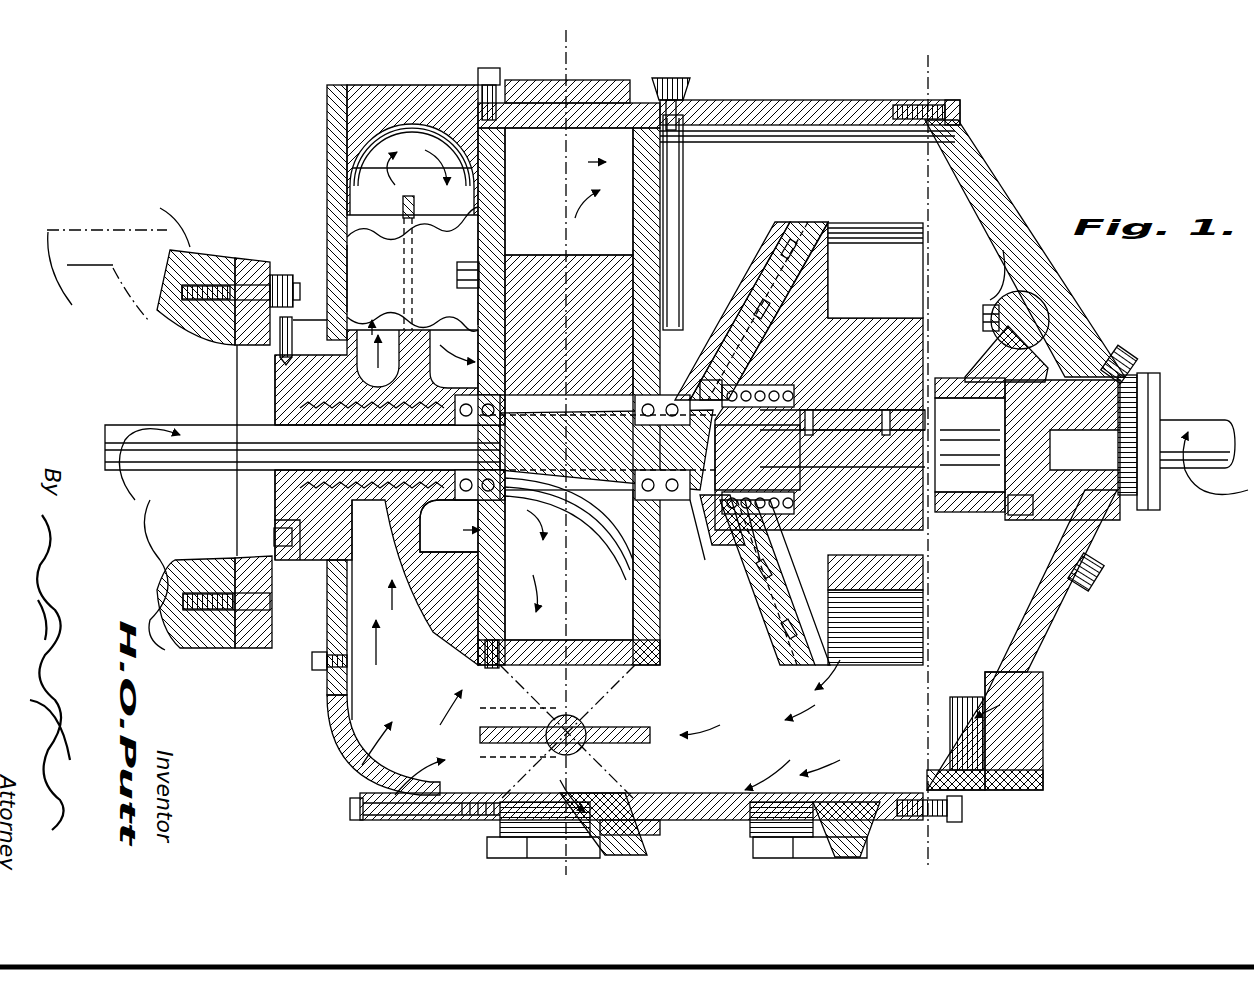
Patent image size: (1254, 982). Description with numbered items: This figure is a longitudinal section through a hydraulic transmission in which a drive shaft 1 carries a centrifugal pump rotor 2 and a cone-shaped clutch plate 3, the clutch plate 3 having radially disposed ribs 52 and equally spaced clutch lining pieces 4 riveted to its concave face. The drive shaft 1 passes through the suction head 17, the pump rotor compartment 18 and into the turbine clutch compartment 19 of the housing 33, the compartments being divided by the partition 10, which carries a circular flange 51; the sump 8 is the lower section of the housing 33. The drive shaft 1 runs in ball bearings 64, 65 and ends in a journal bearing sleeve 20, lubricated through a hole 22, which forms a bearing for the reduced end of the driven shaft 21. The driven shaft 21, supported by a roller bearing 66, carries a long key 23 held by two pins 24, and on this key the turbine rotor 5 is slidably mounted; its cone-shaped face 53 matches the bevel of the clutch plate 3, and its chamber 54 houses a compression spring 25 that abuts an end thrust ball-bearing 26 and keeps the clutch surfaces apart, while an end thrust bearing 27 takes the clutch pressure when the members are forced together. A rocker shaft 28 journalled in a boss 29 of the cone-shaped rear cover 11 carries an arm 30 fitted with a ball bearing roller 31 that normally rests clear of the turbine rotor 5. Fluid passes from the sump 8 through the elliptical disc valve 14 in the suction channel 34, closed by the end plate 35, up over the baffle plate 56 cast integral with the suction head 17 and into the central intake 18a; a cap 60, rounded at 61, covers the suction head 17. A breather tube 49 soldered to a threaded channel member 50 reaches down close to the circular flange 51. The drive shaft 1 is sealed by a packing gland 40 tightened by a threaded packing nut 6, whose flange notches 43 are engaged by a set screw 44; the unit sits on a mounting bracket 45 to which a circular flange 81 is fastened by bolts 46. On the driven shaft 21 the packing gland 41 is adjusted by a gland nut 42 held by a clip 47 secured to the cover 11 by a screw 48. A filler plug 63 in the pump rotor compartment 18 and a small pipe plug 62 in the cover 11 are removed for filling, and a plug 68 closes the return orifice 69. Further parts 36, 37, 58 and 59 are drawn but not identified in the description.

The drive shaft 1 is at (212, 430).
The centrifugal pump rotor 2 is at (590, 262).
The cone-shaped clutch plate 3 is at (900, 70).
The clutch lining pieces 4 is at (890, 140).
The turbine rotor 5 is at (840, 233).
The threaded packing nut 6 is at (276, 500).
The sump 8 is at (700, 780).
The partition 10 is at (640, 576).
The rear cover 11 is at (982, 188).
The elliptical disc valve 14 is at (627, 730).
The suction head 17 is at (330, 266).
The pump rotor compartment 18 is at (575, 125).
The central intake 18a is at (538, 412).
The turbine clutch compartment 19 is at (748, 142).
The journal bearing sleeve 20 is at (738, 432).
The driven shaft 21 is at (1195, 430).
The hole 22 is at (732, 520).
The long key 23 is at (872, 410).
The pins 24 is at (815, 432).
The compression spring 25 is at (750, 394).
The end thrust ball-bearing 26 is at (748, 522).
The end thrust bearing 27 is at (735, 390).
The rocker shaft 28 is at (1035, 325).
The boss 29 is at (1010, 300).
The arm 30 is at (988, 360).
The ball bearing roller 31 is at (1012, 512).
The housing 33 is at (710, 105).
The suction channel 34 is at (372, 197).
The end plate 35 is at (480, 236).
The bolt 36 is at (548, 728).
The spokes 37 is at (578, 718).
The packing gland 40 is at (403, 492).
The packing gland 41 is at (1045, 520).
The gland nut 42 is at (1150, 500).
The notches 43 is at (272, 535).
The set screw 44 is at (280, 350).
The mounting bracket 45 is at (148, 230).
The bolts 46 is at (284, 274).
The clip 47 is at (1130, 378).
The screw 48 is at (1118, 350).
The breather tube 49 is at (683, 212).
The threaded channel member 50 is at (683, 85).
The circular flange 51 is at (710, 500).
The ribs 52 is at (742, 340).
The cone-shaped face 53 is at (770, 548).
The chamber 54 is at (838, 310).
The baffle plate 56 is at (384, 332).
The foot 58 is at (610, 850).
The foot 59 is at (770, 848).
The cap 60 is at (385, 100).
The rounded portion 61 is at (408, 152).
The small pipe plug 62 is at (1102, 576).
The filler plug 63 is at (560, 110).
The ball bearing 64 is at (488, 514).
The ball bearing 65 is at (640, 485).
The roller bearing 66 is at (937, 508).
The plug 68 is at (1035, 750).
The orifice 69 is at (960, 752).
The circular flange 81 is at (250, 283).